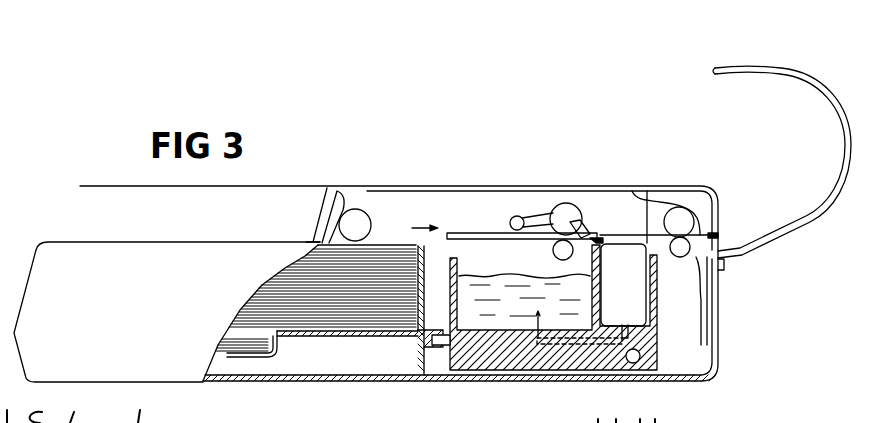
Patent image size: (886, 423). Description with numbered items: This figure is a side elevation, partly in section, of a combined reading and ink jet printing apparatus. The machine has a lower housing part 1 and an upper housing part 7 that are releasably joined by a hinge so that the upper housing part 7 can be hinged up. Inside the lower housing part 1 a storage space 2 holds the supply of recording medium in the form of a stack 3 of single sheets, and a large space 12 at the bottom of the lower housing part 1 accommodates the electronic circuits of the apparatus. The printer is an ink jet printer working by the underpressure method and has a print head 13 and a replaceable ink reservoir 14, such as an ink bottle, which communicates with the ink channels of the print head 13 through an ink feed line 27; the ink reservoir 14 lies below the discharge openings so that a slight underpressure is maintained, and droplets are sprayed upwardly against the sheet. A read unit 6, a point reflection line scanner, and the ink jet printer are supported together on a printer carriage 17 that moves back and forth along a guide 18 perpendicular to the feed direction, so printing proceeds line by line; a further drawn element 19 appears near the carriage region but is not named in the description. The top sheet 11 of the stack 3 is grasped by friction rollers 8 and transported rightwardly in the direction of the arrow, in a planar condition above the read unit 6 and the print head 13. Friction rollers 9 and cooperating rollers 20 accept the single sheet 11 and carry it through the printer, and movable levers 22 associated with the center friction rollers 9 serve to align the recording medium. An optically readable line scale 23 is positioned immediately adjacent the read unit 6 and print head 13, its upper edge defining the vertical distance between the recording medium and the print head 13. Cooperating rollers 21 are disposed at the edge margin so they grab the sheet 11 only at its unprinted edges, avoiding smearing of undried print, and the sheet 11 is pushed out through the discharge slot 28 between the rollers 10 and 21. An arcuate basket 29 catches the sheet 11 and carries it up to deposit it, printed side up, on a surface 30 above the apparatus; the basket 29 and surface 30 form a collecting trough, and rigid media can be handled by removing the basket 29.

The lower housing part 1 is at (140, 258).
The storage space 2 is at (262, 345).
The stack 3 is at (303, 267).
The read unit 6 is at (648, 191).
The upper housing part 7 is at (324, 189).
The friction rollers 8 is at (352, 218).
The friction rollers 9 is at (566, 203).
The friction rollers 10 is at (678, 205).
The top sheet 11 is at (401, 242).
The space 12 is at (375, 360).
The print head 13 is at (637, 308).
The ink reservoir 14 is at (502, 313).
The printer carriage 17 is at (562, 354).
The guide 18 is at (633, 364).
The latch 19 is at (447, 344).
The cooperating rollers 20 is at (556, 253).
The cooperating rollers 21 is at (719, 264).
The movable levers 22 is at (537, 213).
The line scale 23 is at (598, 232).
The ink feed line 27 is at (606, 352).
The discharge slot 28 is at (716, 234).
The arcuate basket 29 is at (820, 212).
The surface 30 is at (98, 186).